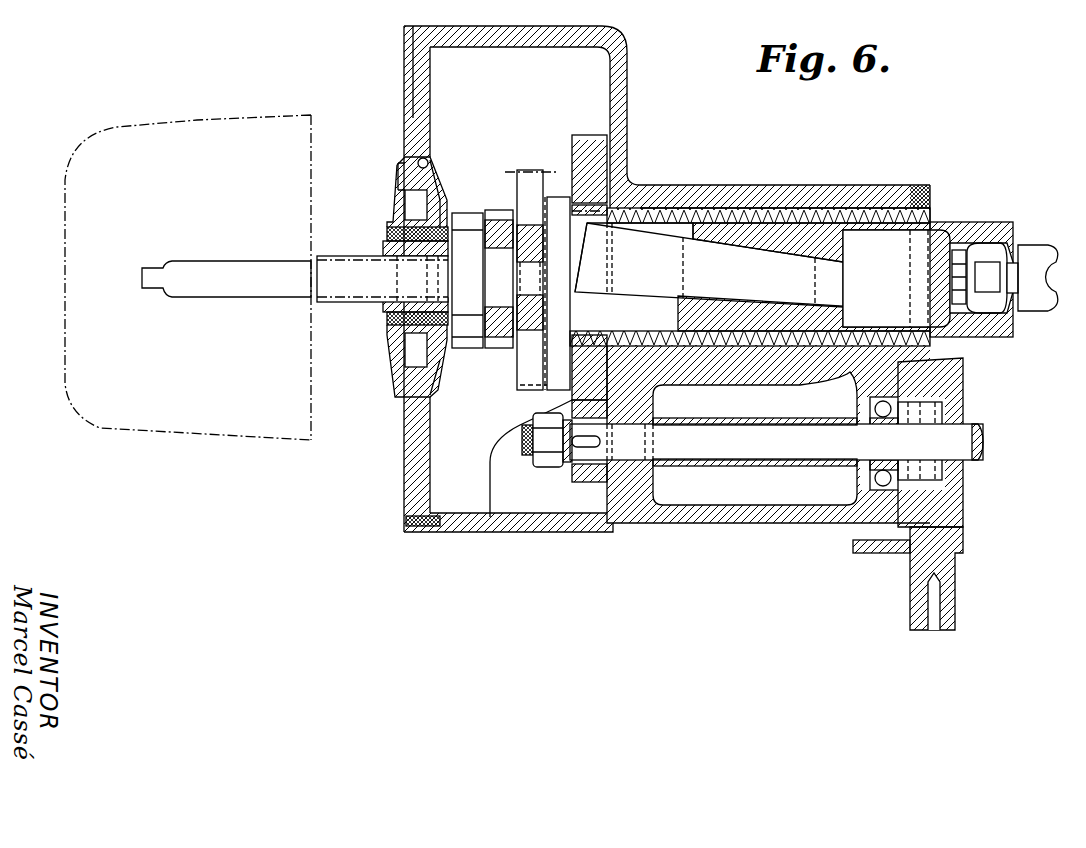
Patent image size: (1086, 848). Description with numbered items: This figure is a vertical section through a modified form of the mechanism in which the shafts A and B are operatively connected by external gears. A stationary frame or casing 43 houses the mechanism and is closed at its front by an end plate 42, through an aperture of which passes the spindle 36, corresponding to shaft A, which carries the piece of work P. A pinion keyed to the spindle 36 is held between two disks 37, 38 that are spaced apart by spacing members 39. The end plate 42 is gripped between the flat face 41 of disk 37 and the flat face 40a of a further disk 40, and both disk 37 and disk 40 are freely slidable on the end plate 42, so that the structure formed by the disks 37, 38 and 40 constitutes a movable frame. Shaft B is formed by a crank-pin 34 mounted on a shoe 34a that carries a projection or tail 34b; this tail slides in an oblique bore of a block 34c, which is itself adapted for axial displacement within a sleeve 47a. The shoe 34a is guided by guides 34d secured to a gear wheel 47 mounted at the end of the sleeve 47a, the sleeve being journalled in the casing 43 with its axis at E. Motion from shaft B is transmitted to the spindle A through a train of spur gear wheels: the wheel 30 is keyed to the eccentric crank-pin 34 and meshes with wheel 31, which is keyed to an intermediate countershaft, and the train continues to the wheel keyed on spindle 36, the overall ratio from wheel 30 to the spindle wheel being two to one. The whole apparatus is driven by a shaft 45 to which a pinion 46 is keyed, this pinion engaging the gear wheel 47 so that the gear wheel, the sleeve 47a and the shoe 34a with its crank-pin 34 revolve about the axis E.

The spur gear wheel 30 is at (562, 277).
The spur gear wheel 31 is at (531, 258).
The crank-pin 34 is at (557, 293).
The shoe 34a is at (744, 277).
The projection or tail 34b is at (640, 192).
The block 34c is at (811, 203).
The guides 34d is at (518, 378).
The spindle 36 is at (226, 264).
The disk 37 is at (445, 235).
The disk 38 is at (485, 279).
The spacing members 39 is at (471, 280).
The disk 40 is at (395, 277).
The flat face 40a is at (380, 163).
The flat face 41 is at (447, 265).
The end plate 42 is at (398, 279).
The stationary frame or casing 43 is at (508, 535).
The drive shaft 45 is at (776, 442).
The pinion 46 is at (561, 461).
The gear wheel 47 is at (536, 326).
The sleeve 47a is at (750, 247).
The shaft A is at (361, 266).
The shaft B is at (530, 278).
The axis E is at (709, 265).
The piece of work P is at (188, 295).